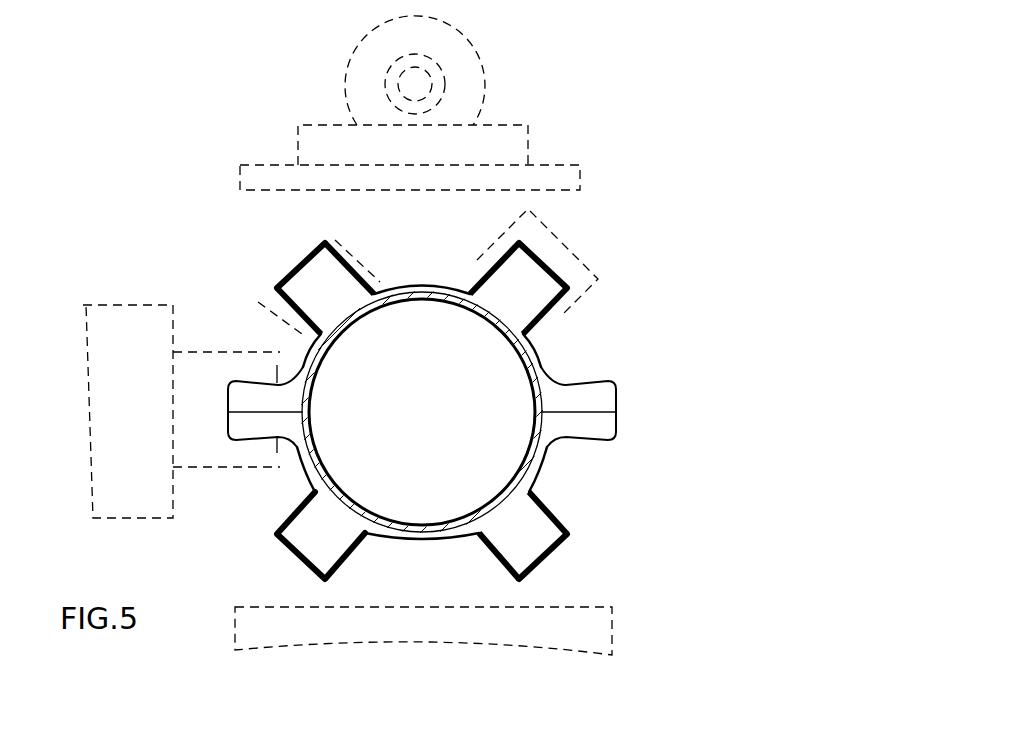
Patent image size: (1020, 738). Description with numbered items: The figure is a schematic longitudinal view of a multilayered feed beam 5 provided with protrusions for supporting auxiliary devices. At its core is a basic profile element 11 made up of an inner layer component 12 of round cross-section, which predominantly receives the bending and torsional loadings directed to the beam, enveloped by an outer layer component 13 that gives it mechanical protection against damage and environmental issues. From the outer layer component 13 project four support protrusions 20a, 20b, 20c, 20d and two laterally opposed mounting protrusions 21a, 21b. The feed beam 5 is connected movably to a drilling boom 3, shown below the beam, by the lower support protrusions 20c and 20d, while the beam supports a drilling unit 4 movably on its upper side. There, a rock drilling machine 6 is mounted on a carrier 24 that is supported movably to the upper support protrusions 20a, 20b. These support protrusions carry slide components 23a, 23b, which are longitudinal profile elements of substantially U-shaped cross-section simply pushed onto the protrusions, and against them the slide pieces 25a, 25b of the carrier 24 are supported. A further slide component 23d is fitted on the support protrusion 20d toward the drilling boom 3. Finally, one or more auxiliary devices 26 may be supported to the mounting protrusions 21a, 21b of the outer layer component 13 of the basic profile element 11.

The drilling boom 3 is at (575, 622).
The drilling unit 4 is at (242, 80).
The feed beam 5 is at (662, 392).
The rock drilling machine 6 is at (463, 83).
The basic profile element 11 is at (446, 393).
The inner layer component 12 is at (395, 305).
The outer layer component 13 is at (328, 312).
The support protrusion 20a is at (302, 270).
The support protrusion 20b is at (542, 279).
The support protrusion 20c is at (325, 525).
The support protrusion 20d is at (576, 518).
The mounting protrusion 21a is at (257, 400).
The mounting protrusion 21b is at (580, 395).
The slide component 23a is at (297, 262).
The slide component 23b is at (563, 312).
The slide component 23d is at (567, 523).
The carrier 24 is at (560, 173).
The slide piece 25a is at (277, 307).
The slide piece 25b is at (572, 252).
The auxiliary device 26 is at (130, 303).